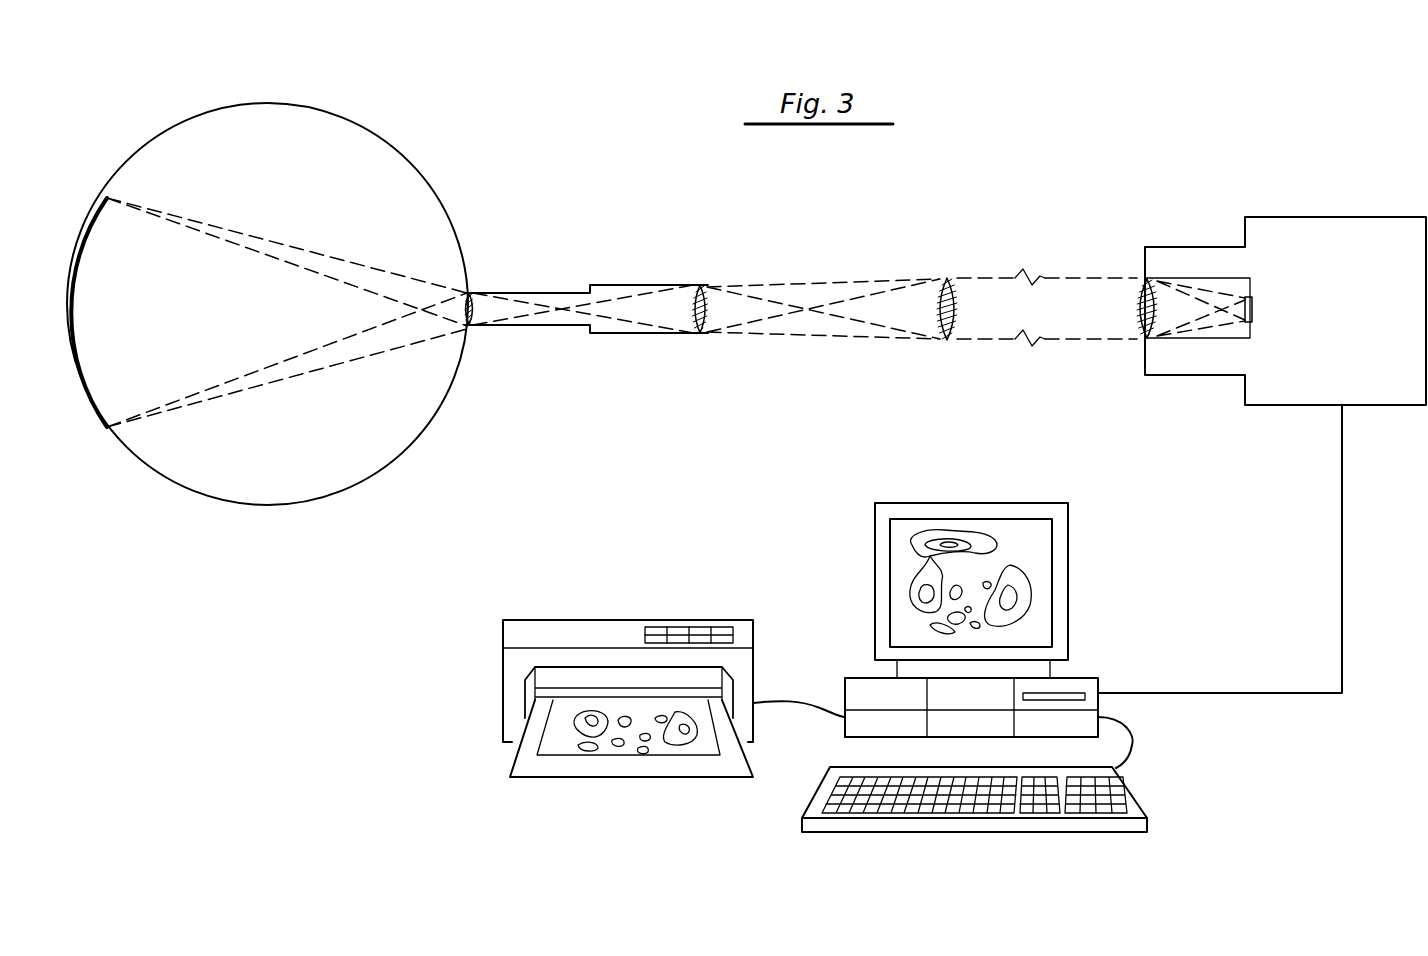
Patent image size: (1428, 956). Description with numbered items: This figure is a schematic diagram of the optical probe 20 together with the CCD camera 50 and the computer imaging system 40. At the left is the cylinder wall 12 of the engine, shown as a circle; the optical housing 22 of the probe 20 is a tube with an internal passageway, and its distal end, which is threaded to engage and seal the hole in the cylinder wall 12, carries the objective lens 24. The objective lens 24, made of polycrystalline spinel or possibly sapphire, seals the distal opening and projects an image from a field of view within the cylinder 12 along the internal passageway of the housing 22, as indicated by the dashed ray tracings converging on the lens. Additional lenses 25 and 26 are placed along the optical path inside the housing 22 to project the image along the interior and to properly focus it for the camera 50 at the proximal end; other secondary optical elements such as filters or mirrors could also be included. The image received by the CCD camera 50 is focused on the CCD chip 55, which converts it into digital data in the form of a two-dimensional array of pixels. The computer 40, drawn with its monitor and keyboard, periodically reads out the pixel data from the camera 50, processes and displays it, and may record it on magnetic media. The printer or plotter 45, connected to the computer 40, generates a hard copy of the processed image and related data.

The cylinder wall 12 is at (190, 129).
The optical probe 20 is at (855, 291).
The optical housing 22 is at (625, 285).
The objective lens 24 is at (476, 306).
The additional lens 25 is at (708, 318).
The additional lens 26 is at (960, 338).
The CCD camera 50 is at (1281, 266).
The CCD chip 55 is at (1252, 307).
The computer imaging system 40 is at (1090, 662).
The printer or plotter 45 is at (628, 625).